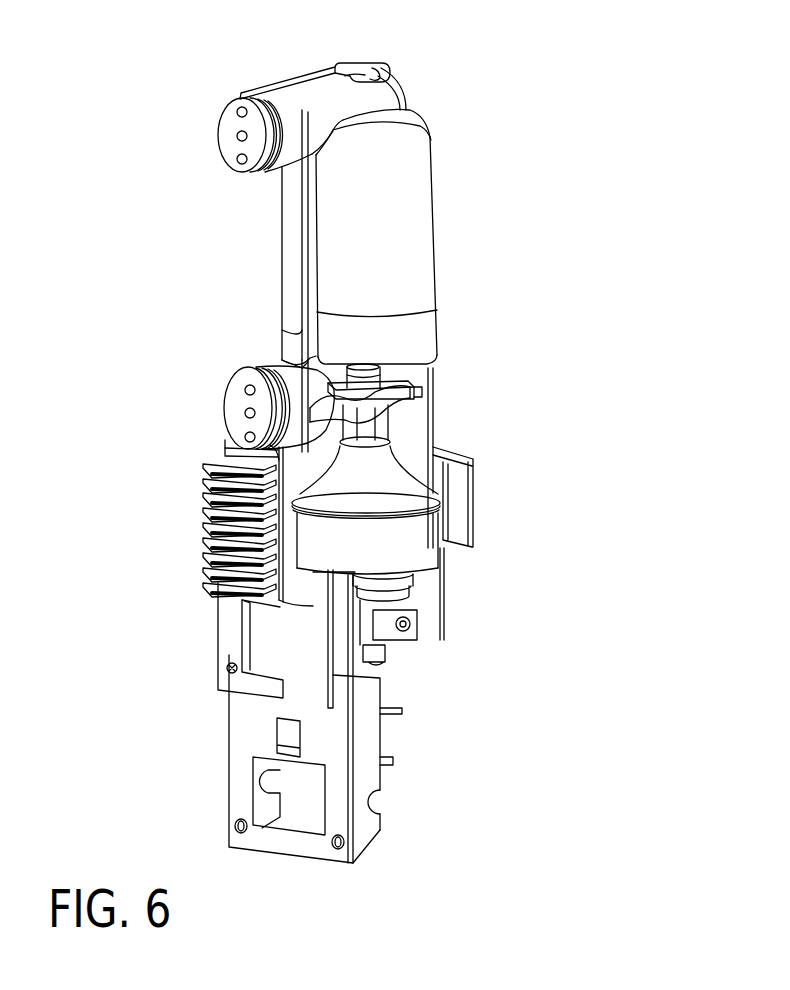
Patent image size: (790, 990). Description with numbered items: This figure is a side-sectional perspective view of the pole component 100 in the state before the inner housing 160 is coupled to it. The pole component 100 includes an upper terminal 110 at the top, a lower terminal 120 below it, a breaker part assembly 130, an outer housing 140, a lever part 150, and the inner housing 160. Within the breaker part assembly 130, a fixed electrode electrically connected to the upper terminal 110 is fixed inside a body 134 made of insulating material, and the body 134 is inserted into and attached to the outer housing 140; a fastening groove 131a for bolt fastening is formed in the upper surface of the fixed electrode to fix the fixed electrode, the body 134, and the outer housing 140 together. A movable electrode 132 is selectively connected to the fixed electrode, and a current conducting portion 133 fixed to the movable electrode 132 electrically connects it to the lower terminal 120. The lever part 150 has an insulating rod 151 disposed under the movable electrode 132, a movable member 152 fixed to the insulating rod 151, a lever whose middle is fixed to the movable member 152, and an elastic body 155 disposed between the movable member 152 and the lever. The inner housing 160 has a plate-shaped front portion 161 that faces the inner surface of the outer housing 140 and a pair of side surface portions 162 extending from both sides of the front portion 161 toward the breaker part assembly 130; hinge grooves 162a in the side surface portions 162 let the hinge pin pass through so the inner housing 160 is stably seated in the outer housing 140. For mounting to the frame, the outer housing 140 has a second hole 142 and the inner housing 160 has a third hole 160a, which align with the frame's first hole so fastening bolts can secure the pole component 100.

The pole component 100 is at (110, 233).
The upper terminal 110 is at (232, 155).
The lower terminal 120 is at (237, 388).
The outer housing 140 is at (284, 258).
The fastening groove 131a is at (351, 72).
The breaker part assembly 130 is at (550, 346).
The movable electrode 132 is at (393, 383).
The current conducting portion 133 is at (375, 412).
The body 134 is at (430, 290).
The lever part 150 is at (550, 543).
The insulating rod 151 is at (430, 540).
The movable member 152 is at (430, 655).
The elastic body 155 is at (415, 590).
The inner housing 160 is at (120, 697).
The front portion 161 is at (243, 707).
The side surface portions 162 is at (358, 740).
The hinge grooves 162a is at (357, 802).
The third hole 160a is at (332, 843).
The second hole 142 is at (226, 669).